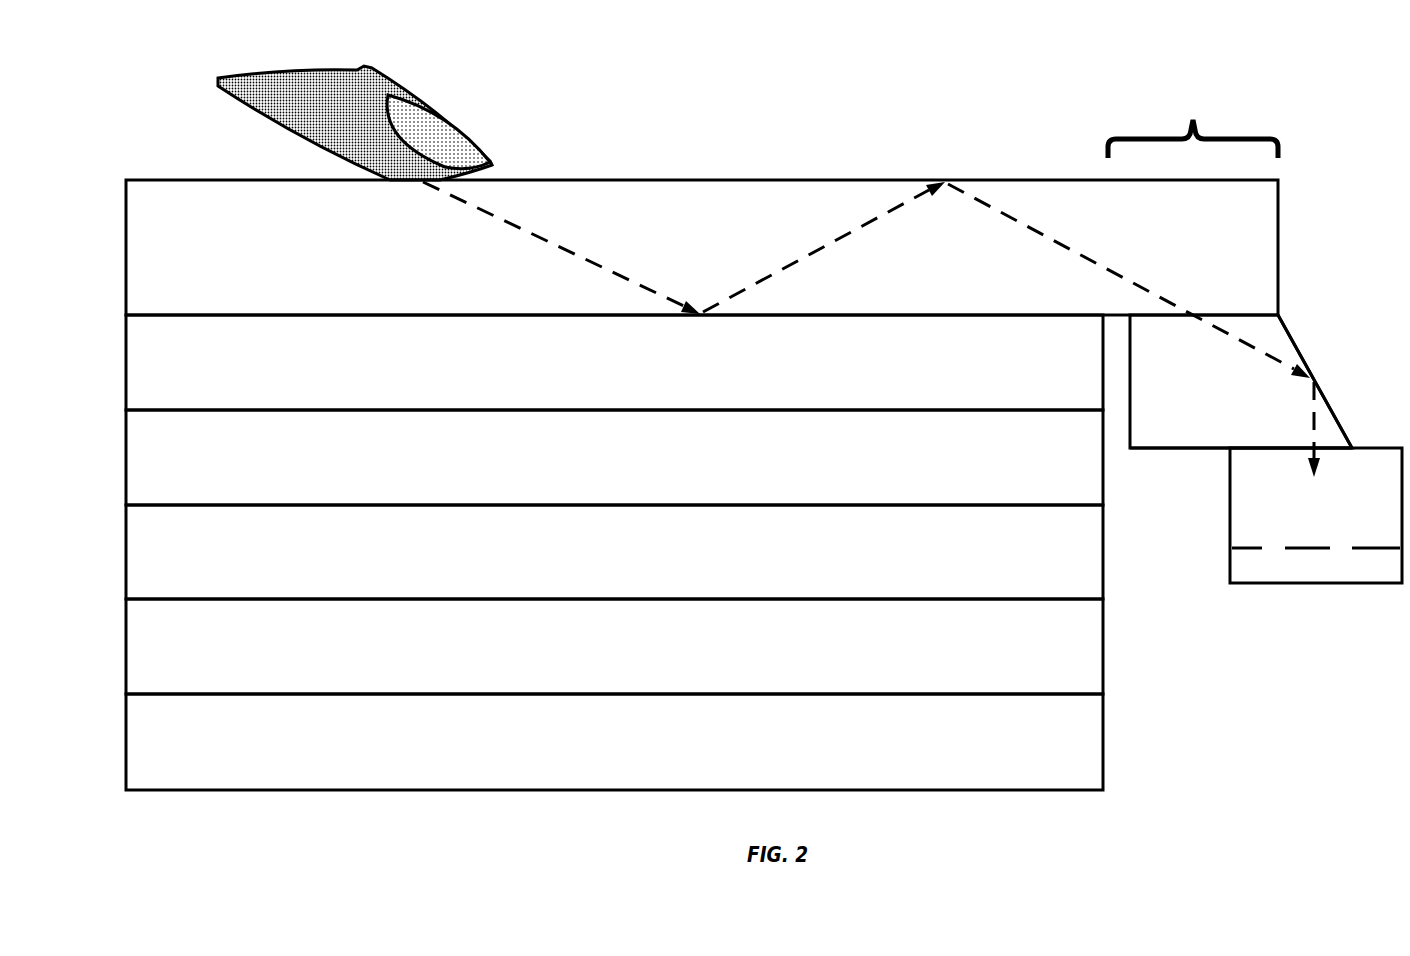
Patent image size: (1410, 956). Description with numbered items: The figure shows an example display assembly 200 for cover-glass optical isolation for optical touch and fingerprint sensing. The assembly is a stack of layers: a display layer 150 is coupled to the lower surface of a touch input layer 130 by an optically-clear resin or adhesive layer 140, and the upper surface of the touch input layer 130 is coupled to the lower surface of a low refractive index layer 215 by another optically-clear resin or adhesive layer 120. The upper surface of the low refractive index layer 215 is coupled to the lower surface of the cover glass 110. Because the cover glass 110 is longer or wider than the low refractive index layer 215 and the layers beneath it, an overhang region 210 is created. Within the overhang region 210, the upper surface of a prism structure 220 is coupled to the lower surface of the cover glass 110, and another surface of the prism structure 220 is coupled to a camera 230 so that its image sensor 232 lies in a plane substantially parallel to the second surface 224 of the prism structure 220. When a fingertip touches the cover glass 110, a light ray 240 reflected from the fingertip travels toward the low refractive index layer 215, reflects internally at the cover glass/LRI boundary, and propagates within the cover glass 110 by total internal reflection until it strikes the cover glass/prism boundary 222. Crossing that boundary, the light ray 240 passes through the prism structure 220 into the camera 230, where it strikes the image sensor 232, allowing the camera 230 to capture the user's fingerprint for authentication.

The display assembly 200 is at (148, 141).
The cover glass layer 110 is at (719, 287).
The low refractive index layer 215 is at (632, 402).
The optically-clear resin or optically-clear adhesive layer 120 is at (632, 497).
The touch input layer 130 is at (632, 592).
The optically-clear resin or optically-clear adhesive layer 140 is at (632, 686).
The display layer 150 is at (632, 781).
The overhang region 210 is at (1193, 109).
The prism structure 220 is at (1220, 436).
The cover glass/prism boundary 222 is at (1287, 315).
The second surface of the prism structure 224 is at (1200, 452).
The camera 230 is at (1333, 534).
The image sensor 232 is at (1333, 577).
The light ray 240 is at (551, 235).